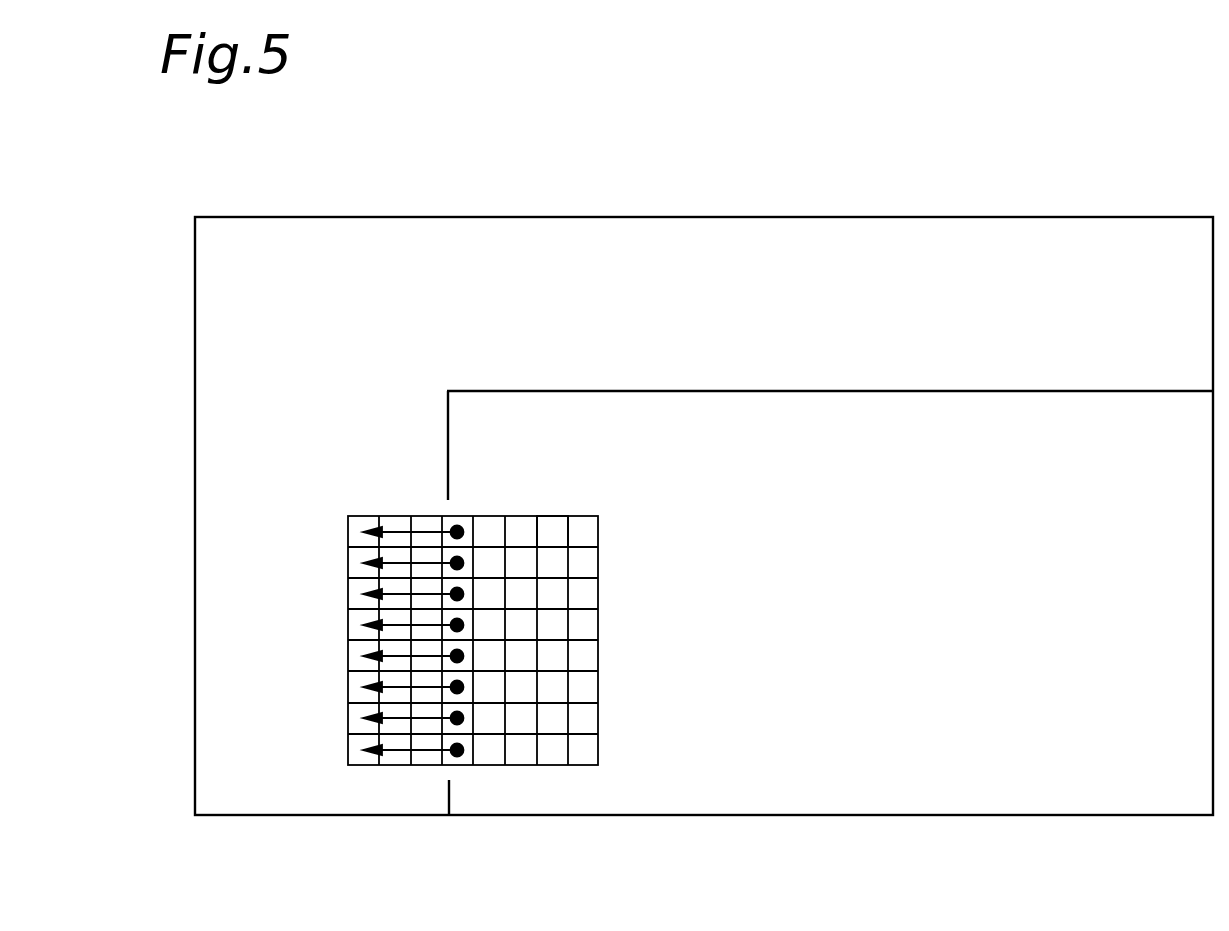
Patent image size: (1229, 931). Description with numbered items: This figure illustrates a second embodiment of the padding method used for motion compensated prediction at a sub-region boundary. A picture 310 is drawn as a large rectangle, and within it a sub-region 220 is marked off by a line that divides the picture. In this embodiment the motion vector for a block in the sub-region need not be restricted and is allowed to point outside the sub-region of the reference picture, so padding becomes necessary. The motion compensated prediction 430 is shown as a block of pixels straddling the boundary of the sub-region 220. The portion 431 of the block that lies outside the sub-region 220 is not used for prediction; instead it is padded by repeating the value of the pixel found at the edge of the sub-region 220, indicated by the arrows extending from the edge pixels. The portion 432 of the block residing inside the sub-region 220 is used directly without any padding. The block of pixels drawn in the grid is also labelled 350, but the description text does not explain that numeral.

The picture 310 is at (928, 215).
The sub-region 220 is at (1015, 389).
The pixel grid block 350 is at (593, 767).
The motion compensated prediction 430 is at (348, 655).
The portion of the block residing outside of the sub-region 431 is at (394, 530).
The portion of the block residing in the sub-region 432 is at (552, 515).